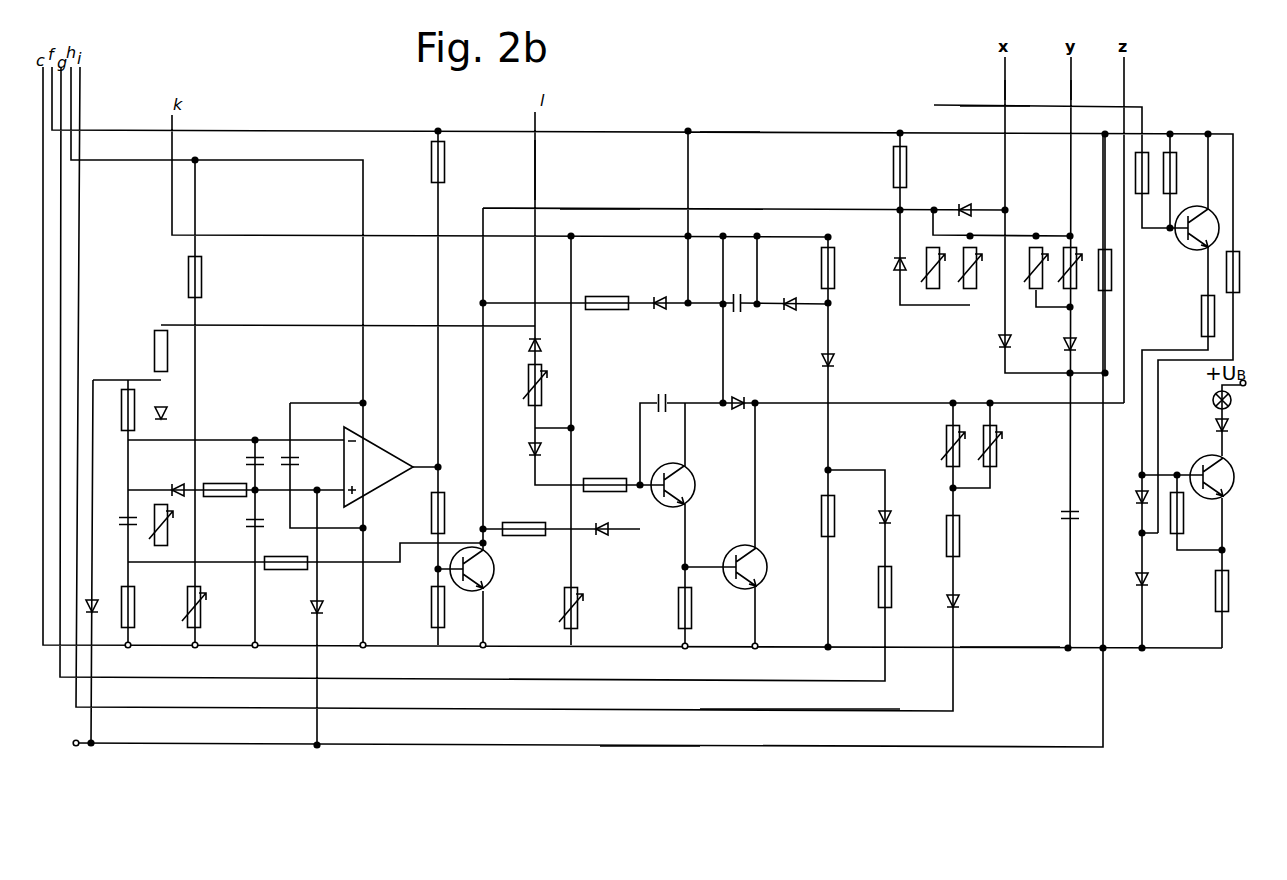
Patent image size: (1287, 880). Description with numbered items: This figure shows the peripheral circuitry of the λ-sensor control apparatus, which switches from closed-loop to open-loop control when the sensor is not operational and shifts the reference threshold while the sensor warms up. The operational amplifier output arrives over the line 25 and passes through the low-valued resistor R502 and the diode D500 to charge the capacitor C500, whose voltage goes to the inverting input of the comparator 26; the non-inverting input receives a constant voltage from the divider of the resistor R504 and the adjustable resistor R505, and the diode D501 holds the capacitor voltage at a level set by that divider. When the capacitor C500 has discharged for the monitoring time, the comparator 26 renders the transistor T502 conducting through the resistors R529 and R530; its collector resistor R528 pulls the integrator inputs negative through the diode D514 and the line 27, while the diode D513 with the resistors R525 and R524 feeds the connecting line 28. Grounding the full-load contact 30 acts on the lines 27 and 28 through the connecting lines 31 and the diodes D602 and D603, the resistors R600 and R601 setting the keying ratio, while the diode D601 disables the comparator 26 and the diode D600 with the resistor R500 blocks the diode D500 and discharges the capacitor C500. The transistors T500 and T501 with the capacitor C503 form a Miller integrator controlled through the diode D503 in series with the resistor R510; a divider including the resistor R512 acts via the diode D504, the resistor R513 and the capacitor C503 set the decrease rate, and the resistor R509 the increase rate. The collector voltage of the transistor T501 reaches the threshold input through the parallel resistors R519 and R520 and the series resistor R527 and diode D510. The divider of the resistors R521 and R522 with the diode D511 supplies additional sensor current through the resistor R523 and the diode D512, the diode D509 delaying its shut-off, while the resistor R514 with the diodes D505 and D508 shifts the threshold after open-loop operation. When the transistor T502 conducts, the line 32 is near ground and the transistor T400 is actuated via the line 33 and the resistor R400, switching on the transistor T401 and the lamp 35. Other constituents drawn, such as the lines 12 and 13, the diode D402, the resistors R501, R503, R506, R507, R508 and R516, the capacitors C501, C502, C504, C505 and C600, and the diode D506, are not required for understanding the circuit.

The supply line 12 is at (757, 131).
The ground line 13 is at (1012, 649).
The line 25 is at (536, 172).
The comparator 26 is at (380, 452).
The line 27 is at (1007, 120).
The connecting line 28 is at (1074, 120).
The input contact 30 is at (955, 711).
The connecting lines 31 is at (735, 748).
The line 32 is at (597, 209).
The line 33 is at (1022, 110).
The indicating lamp 35 is at (1213, 400).
The resistor R400 is at (1146, 160).
The transistor T400 is at (1210, 222).
The transistor T401 is at (1196, 467).
The diode D402 is at (1216, 429).
The resistor R500 is at (126, 405).
The resistor R501 is at (148, 586).
The resistor R502 is at (160, 343).
The variable resistor R503 is at (166, 530).
The resistor R504 is at (198, 283).
The adjustable resistor R505 is at (198, 600).
The resistor R506 is at (218, 497).
The resistor R507 is at (282, 568).
The resistor R508 is at (432, 168).
The resistor R509 is at (520, 523).
The resistor R510 is at (530, 386).
The resistor R512 is at (579, 606).
The resistor R513 is at (600, 493).
The resistor R514 is at (606, 310).
The resistor R516 is at (715, 608).
The resistor R519 is at (946, 452).
The resistor R520 is at (996, 446).
The resistor R521 is at (822, 268).
The resistor R522 is at (822, 516).
The resistor R523 is at (889, 600).
The resistor R524 is at (968, 290).
The resistor R525 is at (930, 289).
The resistor R527 is at (959, 540).
The collector resistor R528 is at (895, 170).
The resistor R529 is at (434, 521).
The resistor R530 is at (434, 612).
The resistor R600 is at (1035, 246).
The resistor R601 is at (1073, 250).
The capacitor C500 is at (131, 515).
The capacitor C501 is at (250, 458).
The capacitor C502 is at (291, 456).
The capacitor C503 is at (660, 395).
The capacitor C504 is at (735, 312).
The capacitor C505 is at (256, 529).
The capacitor C600 is at (1064, 518).
The diode D500 is at (167, 412).
The diode D501 is at (176, 490).
The diode D503 is at (530, 346).
The diode D504 is at (532, 452).
The diode D505 is at (660, 310).
The diode D506 is at (600, 537).
The diode D508 is at (739, 410).
The diode D509 is at (790, 311).
The diode D510 is at (958, 605).
The diode D511 is at (803, 363).
The diode D512 is at (887, 526).
The diode D513 is at (895, 265).
The diode D514 is at (968, 205).
The diode D600 is at (93, 600).
The diode D601 is at (315, 612).
The diode D602 is at (1000, 342).
The diode D603 is at (1062, 346).
The transistor T500 is at (688, 480).
The transistor T501 is at (735, 562).
The transistor T502 is at (488, 574).